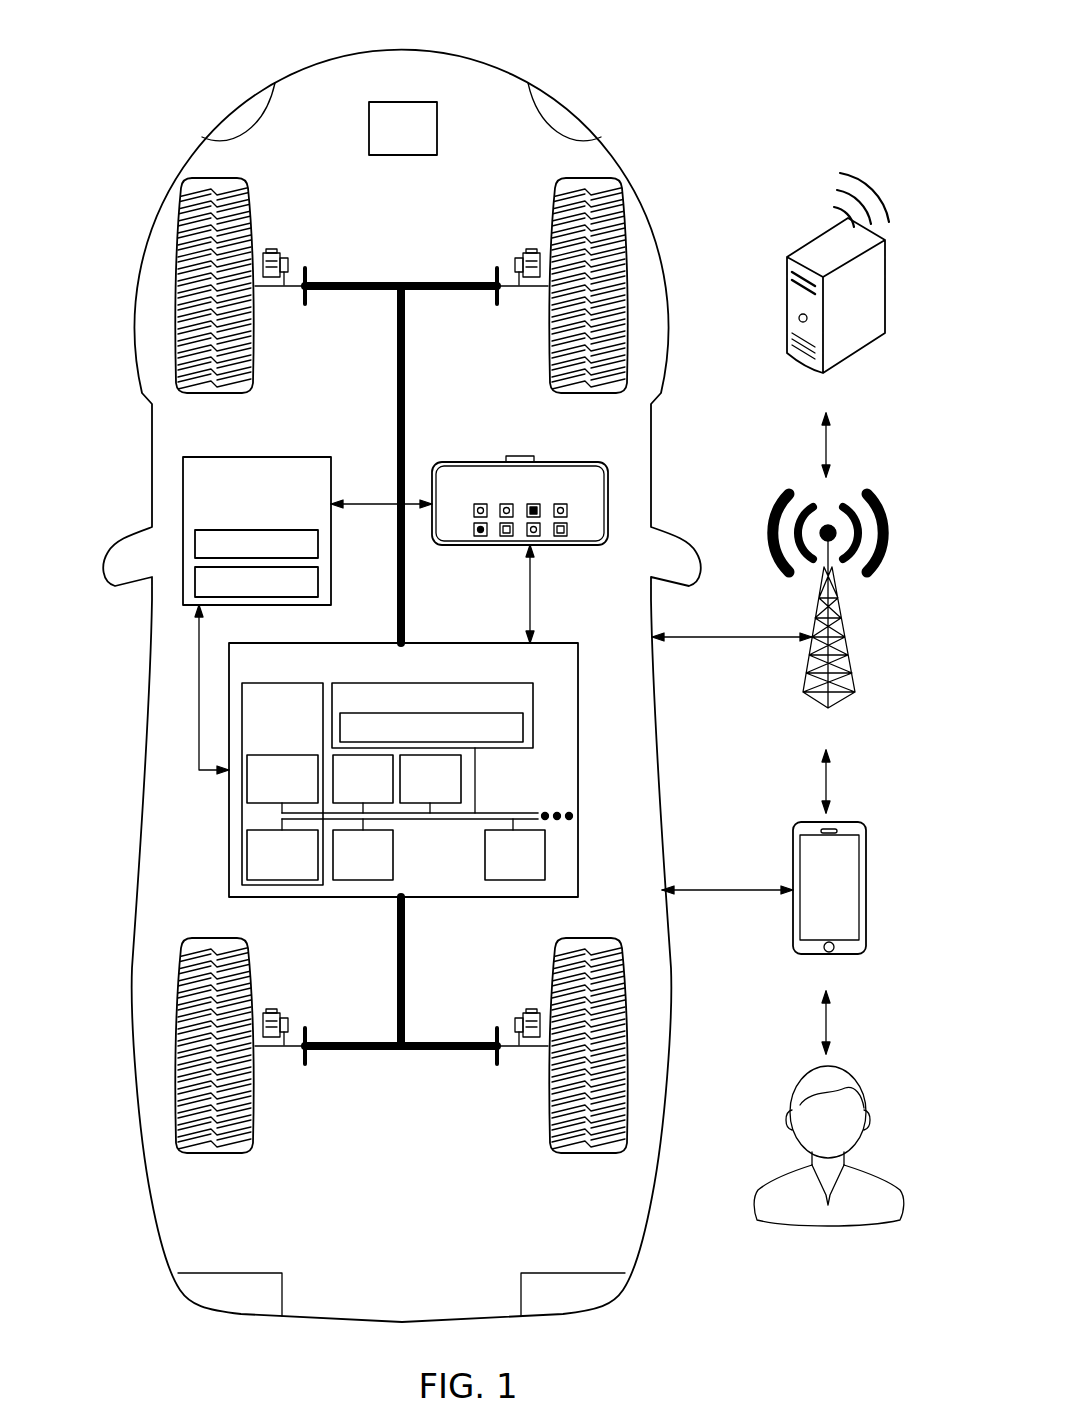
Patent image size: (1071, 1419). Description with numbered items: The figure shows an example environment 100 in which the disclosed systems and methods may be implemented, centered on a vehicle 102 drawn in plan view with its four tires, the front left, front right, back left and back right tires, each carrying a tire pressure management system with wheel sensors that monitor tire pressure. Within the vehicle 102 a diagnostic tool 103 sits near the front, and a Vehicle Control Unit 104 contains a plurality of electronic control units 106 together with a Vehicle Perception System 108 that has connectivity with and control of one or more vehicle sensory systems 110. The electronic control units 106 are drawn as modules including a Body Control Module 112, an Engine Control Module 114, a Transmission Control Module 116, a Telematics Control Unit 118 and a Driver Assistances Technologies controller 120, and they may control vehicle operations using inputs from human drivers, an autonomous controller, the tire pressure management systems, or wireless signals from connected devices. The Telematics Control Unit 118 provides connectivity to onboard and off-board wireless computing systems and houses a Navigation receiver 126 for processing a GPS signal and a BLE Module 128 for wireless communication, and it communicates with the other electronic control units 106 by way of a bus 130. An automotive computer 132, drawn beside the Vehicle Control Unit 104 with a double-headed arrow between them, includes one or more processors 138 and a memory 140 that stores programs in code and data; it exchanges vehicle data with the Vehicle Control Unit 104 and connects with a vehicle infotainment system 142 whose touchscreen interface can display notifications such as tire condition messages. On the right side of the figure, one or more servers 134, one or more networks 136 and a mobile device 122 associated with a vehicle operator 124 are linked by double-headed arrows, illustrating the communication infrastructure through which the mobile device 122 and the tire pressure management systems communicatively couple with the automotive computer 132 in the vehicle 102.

The environment 100 is at (806, 75).
The vehicle 102 is at (132, 966).
The diagnostic tool 103 is at (369, 131).
The Vehicle Control Unit (VCU) 104 is at (393, 802).
The electronic control units (ECUs) 106 is at (556, 762).
The Vehicle Perception System (VPS) 108 is at (533, 692).
The vehicle sensory system 110 is at (523, 726).
The Body Control Module (BCM) 112 is at (383, 803).
The Engine Control Module (ECM) 114 is at (448, 803).
The Transmission Control Module (TCM) 116 is at (343, 880).
The Telematics Control Unit (TCU) 118 is at (242, 708).
The Driver Assistances Technologies (DAT) controller 120 is at (545, 850).
The mobile device 122 is at (862, 822).
The vehicle operator 124 is at (791, 1097).
The Navigation (NAV) receiver 126 is at (247, 790).
The BLE Module (BLEM) 128 is at (247, 852).
The bus 130 is at (522, 813).
The automotive computer 132 is at (184, 540).
The server 134 is at (812, 240).
The network 136 is at (842, 613).
The processor 138 is at (195, 543).
The memory 140 is at (195, 582).
The vehicle infotainment system 142 is at (608, 485).